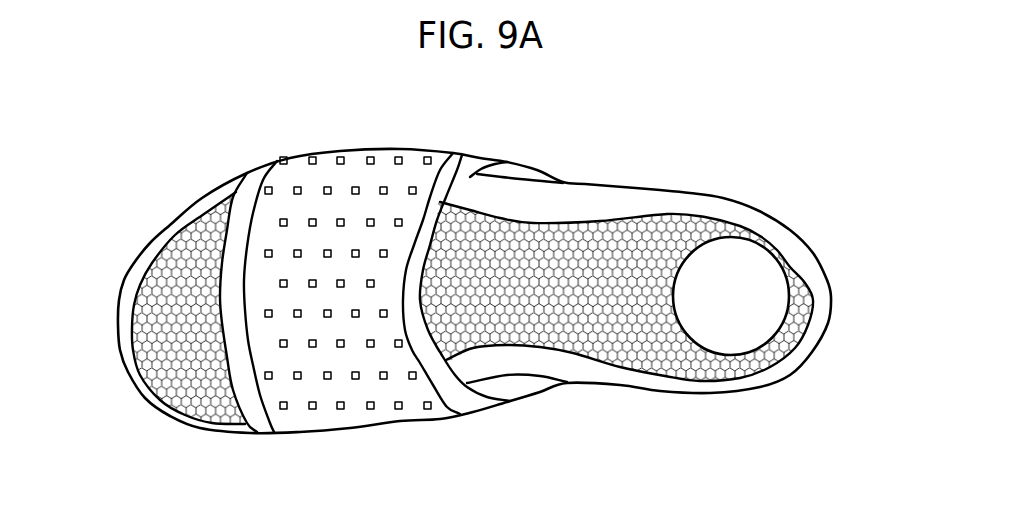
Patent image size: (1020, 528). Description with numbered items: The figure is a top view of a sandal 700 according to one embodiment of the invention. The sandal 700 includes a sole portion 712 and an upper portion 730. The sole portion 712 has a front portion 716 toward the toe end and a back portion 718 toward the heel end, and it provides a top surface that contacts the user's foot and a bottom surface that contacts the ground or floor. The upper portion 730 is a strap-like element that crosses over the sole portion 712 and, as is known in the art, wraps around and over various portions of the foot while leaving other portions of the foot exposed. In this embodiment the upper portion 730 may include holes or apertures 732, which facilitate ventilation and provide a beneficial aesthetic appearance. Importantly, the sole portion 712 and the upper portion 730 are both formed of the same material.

The sandal 700 is at (535, 109).
The sole portion 712 is at (700, 233).
The front portion 716 is at (160, 322).
The back portion 718 is at (783, 330).
The upper portion 730 is at (270, 385).
The holes or apertures 732 is at (247, 343).